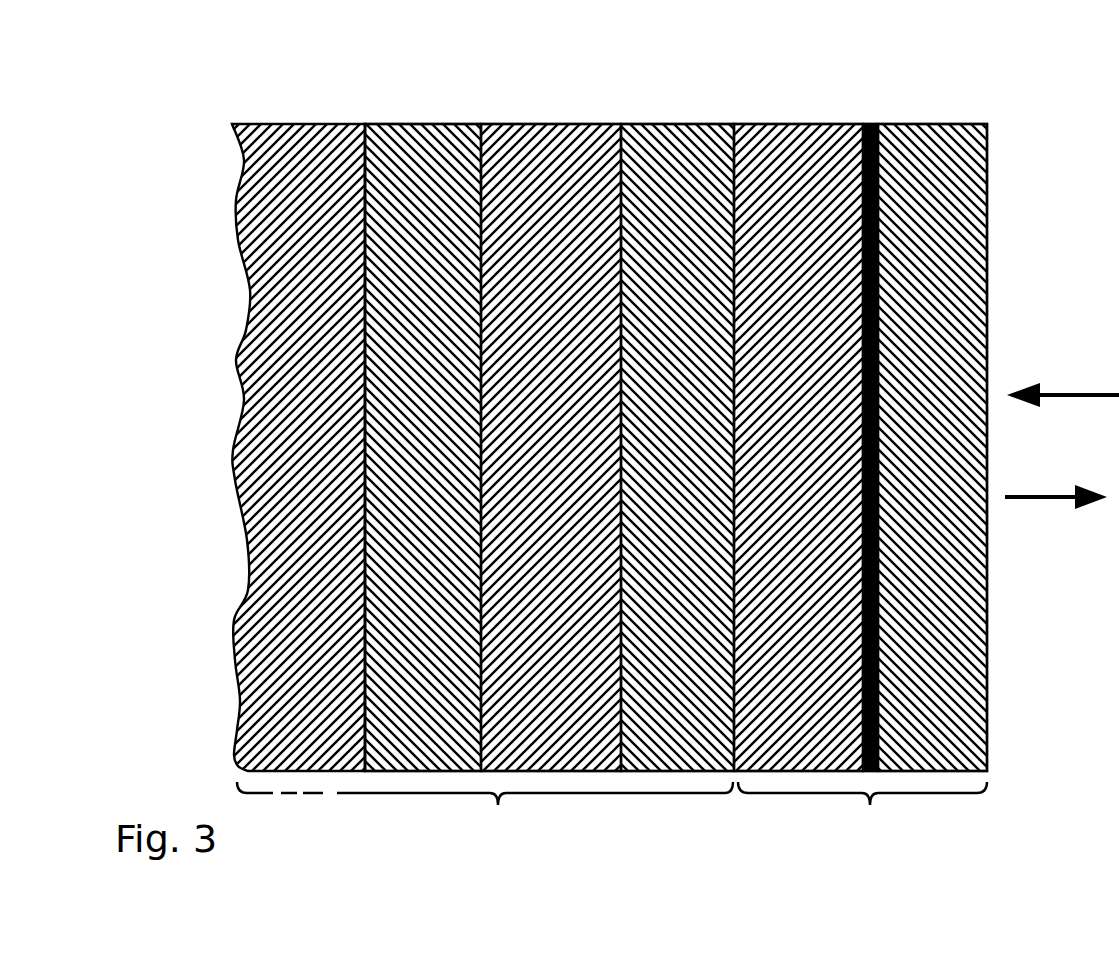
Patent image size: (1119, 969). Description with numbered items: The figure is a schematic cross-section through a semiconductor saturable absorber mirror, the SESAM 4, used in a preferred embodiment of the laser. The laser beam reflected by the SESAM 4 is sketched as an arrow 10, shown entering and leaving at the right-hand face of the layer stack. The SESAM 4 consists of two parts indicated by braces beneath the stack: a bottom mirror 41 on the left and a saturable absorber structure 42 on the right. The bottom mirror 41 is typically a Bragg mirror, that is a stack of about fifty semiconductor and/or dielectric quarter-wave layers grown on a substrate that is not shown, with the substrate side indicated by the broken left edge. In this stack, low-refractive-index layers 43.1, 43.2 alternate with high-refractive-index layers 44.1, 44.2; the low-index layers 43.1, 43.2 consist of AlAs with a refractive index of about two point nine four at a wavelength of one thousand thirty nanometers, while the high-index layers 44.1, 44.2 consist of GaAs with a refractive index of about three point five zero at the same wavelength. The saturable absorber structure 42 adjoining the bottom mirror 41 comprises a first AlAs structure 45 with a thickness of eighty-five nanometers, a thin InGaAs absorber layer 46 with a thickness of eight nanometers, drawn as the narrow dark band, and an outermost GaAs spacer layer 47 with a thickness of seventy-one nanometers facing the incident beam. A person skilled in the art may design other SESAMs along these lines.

The SESAM 4 is at (185, 165).
The arrow 10 is at (1092, 394).
The bottom mirror 41 is at (485, 818).
The saturable absorber structure 42 is at (862, 818).
The low-refractive-index layer 43.1 is at (545, 135).
The low-refractive-index layer 43.2 is at (297, 137).
The high-refractive-index layer 44.1 is at (680, 130).
The high-refractive-index layer 44.2 is at (421, 137).
The first AlAs structure 45 is at (795, 130).
The InGaAs absorber layer 46 is at (872, 128).
The GaAs spacer layer 47 is at (942, 135).